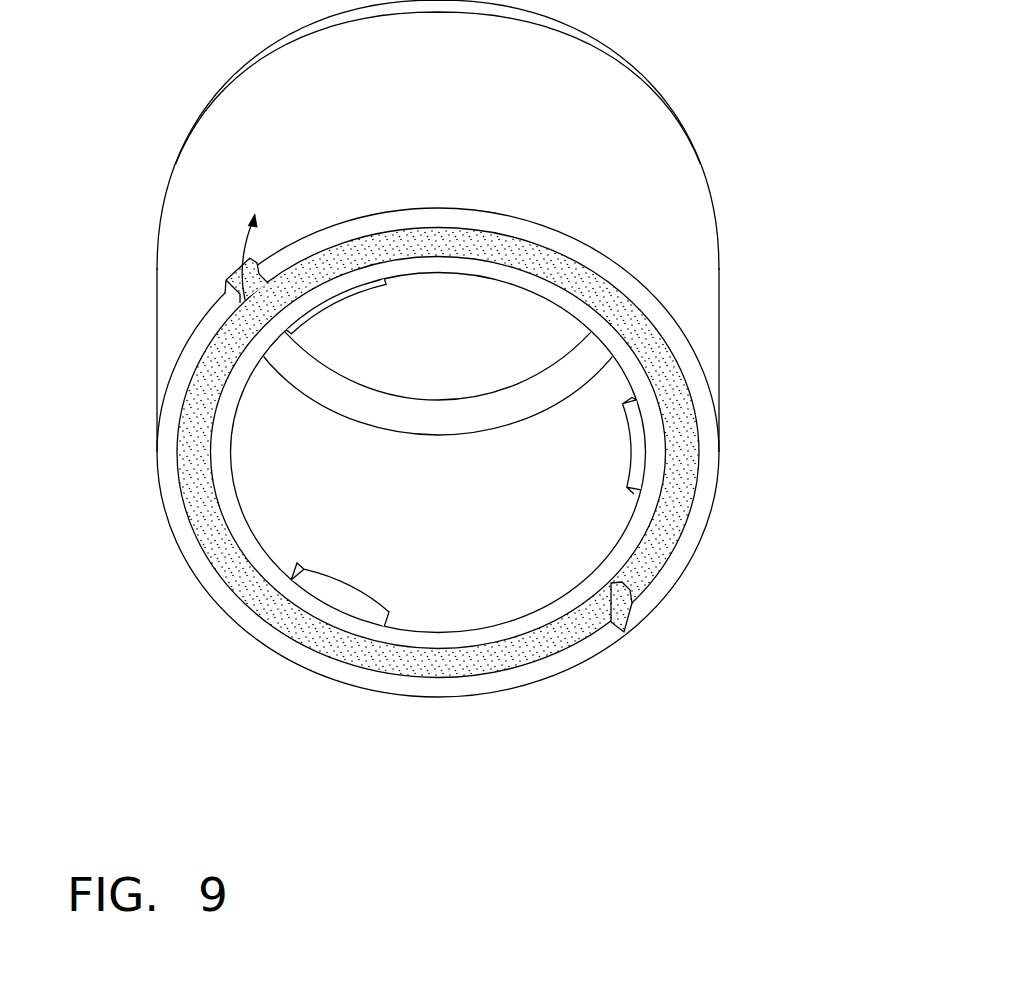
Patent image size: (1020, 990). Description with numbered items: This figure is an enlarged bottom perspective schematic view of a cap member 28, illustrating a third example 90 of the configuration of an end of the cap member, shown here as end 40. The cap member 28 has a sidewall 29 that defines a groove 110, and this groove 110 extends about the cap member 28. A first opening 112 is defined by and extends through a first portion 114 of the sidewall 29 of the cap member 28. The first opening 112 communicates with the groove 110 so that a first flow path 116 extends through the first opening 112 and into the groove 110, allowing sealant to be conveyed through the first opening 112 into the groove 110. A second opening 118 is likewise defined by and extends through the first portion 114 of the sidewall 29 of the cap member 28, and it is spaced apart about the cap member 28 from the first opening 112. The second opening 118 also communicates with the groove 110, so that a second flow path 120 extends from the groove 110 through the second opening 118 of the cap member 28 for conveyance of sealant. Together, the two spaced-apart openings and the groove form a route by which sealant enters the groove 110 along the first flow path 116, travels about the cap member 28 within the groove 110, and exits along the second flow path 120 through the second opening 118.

The cap member 28 is at (580, 68).
The sidewall 29 is at (672, 187).
The end 40 is at (457, 703).
The third example 90 is at (448, 466).
The groove 110 is at (533, 650).
The first opening 112 is at (636, 603).
The first portion 114 is at (680, 552).
The first flow path 116 is at (618, 601).
The second opening 118 is at (232, 268).
The second flow path 120 is at (244, 242).